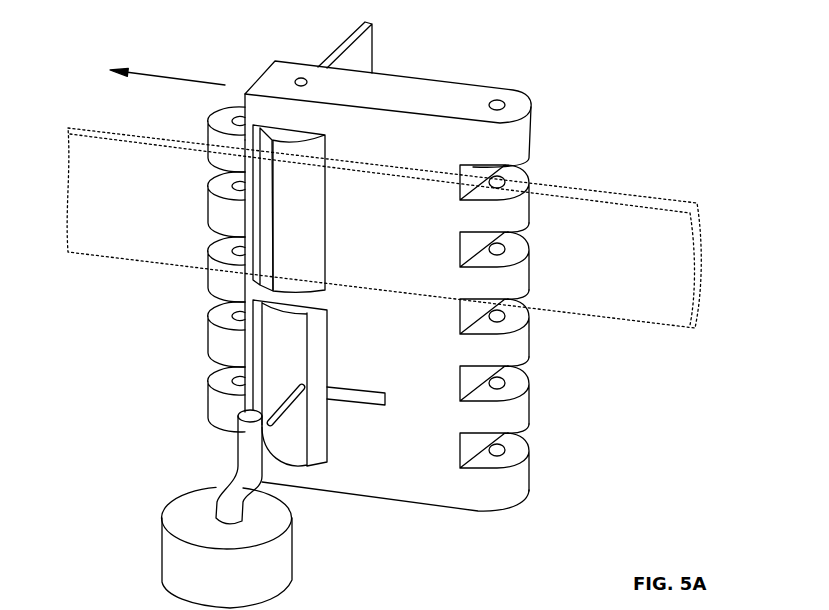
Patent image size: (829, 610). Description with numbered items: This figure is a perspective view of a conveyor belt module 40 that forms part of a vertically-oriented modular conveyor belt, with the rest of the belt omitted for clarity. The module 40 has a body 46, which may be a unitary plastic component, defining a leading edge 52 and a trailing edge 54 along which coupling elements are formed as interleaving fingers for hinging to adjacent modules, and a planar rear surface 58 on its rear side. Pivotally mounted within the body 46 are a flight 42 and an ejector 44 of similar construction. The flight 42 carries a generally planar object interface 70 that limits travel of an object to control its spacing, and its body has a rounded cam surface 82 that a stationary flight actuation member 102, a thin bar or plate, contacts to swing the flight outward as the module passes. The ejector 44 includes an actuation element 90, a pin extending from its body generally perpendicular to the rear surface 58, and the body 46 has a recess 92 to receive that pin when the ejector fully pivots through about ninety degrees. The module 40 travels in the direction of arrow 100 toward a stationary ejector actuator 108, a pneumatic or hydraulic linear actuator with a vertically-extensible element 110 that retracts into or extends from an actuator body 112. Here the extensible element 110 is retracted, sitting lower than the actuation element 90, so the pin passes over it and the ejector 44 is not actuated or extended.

The conveyor belt module 40 is at (590, 63).
The flight 42 is at (344, 180).
The ejector 44 is at (345, 348).
The body 46 is at (415, 90).
The leading edge 52 is at (172, 338).
The trailing edge 54 is at (566, 468).
The rear surface 58 is at (392, 488).
The object interface 70 is at (333, 53).
The cam surface 82 is at (317, 200).
The actuation element 90 is at (285, 398).
The recess 92 is at (362, 404).
The arrow 100 is at (167, 75).
The flight actuation member 102 is at (597, 195).
The ejector actuator 108 is at (114, 483).
The vertically-extensible element 110 is at (245, 455).
The body 112 is at (282, 563).